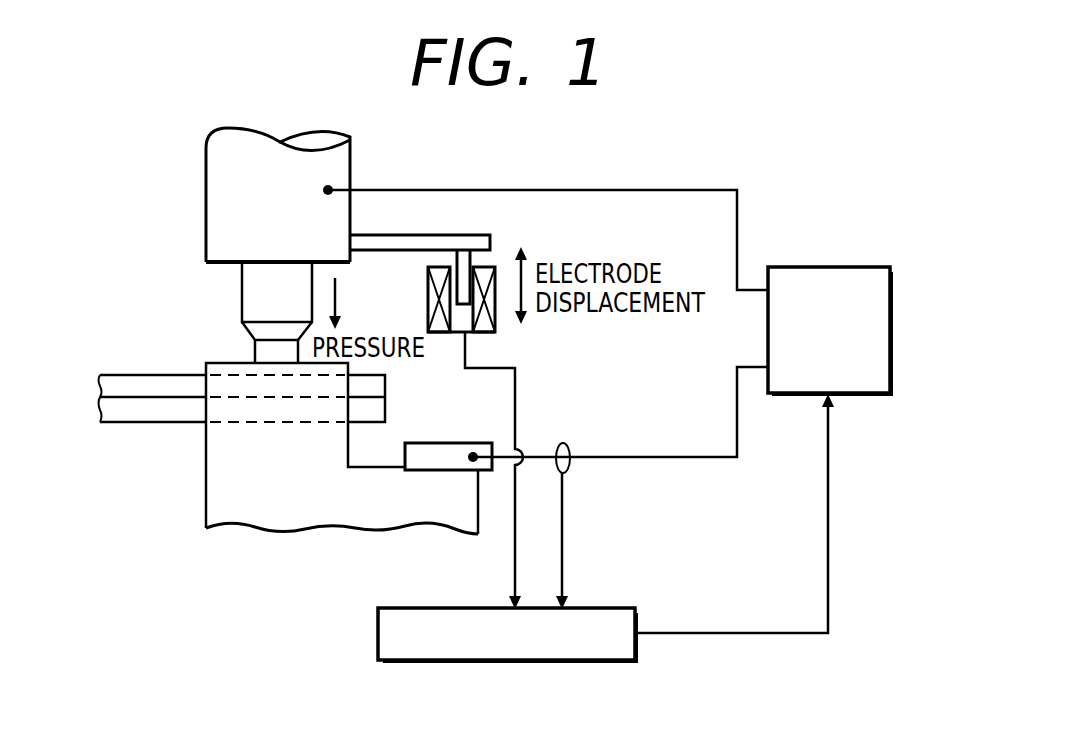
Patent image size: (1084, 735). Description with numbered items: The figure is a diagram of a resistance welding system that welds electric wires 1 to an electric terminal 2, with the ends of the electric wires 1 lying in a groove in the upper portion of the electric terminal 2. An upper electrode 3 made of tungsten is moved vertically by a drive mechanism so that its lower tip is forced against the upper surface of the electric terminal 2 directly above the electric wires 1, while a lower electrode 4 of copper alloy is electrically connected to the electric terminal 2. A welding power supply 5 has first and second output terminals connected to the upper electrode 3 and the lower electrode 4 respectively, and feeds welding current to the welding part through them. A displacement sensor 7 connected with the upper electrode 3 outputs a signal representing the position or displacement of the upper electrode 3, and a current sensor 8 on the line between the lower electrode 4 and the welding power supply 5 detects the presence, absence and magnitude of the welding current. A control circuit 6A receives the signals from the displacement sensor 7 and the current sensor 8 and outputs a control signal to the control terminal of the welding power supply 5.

The electric wires 1 is at (127, 408).
The electric terminal 2 is at (226, 483).
The upper electrode 3 is at (252, 290).
The lower electrode 4 is at (452, 443).
The welding power supply 5 is at (852, 266).
The control circuit 6A is at (598, 608).
The displacement sensor 7 is at (488, 334).
The current sensor 8 is at (563, 444).